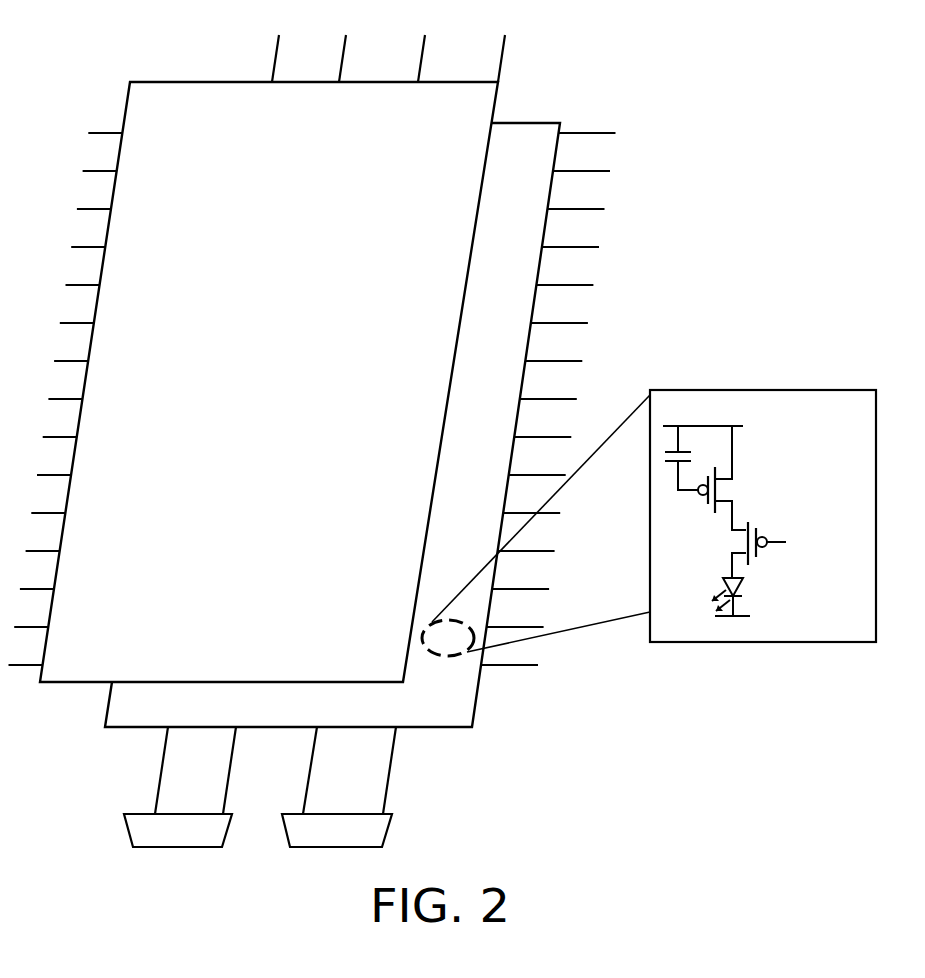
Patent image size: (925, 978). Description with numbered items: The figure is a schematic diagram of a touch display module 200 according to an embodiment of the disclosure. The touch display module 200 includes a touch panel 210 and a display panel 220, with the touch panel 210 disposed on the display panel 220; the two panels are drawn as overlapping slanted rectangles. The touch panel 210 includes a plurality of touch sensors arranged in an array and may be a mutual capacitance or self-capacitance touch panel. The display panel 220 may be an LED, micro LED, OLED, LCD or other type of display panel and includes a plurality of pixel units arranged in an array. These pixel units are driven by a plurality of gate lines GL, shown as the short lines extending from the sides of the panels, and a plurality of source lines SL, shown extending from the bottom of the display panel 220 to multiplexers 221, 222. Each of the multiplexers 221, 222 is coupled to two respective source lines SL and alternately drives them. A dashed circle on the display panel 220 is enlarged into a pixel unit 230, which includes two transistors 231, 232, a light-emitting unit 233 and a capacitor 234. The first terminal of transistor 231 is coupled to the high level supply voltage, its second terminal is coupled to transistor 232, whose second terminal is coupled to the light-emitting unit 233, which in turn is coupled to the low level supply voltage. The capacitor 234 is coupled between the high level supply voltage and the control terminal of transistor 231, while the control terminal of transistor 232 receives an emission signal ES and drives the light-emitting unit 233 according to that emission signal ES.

The touch display module 200 is at (712, 857).
The touch panel 210 is at (182, 100).
The display panel 220 is at (512, 150).
The multiplexer 221 is at (137, 830).
The multiplexer 222 is at (378, 830).
The pixel unit 230 is at (649, 487).
The transistor 231 is at (738, 488).
The transistor 232 is at (730, 546).
The light-emitting unit 233 is at (746, 586).
The capacitor 234 is at (663, 455).
The gate line GL is at (78, 284).
The source line SL is at (160, 775).
The emission signal ES is at (805, 542).